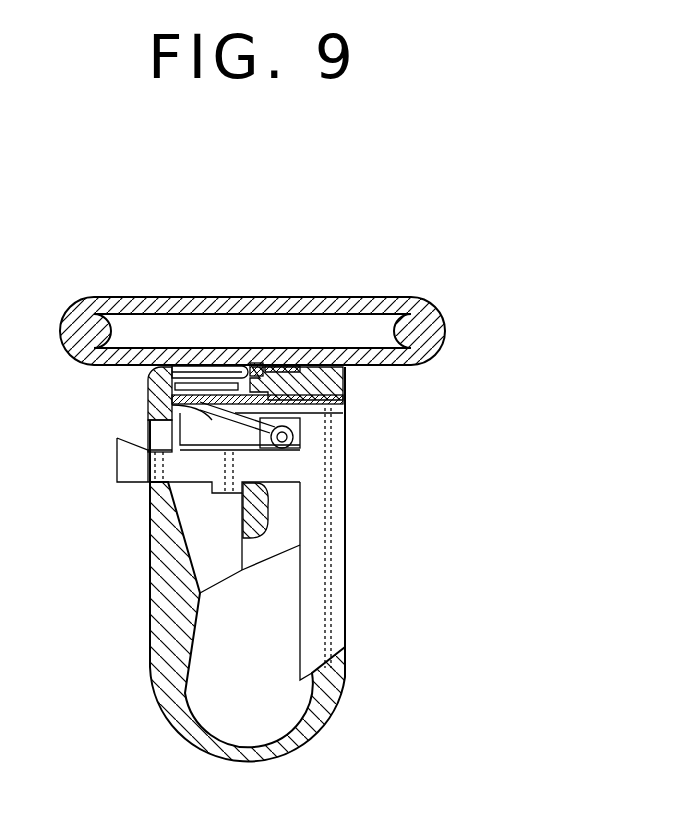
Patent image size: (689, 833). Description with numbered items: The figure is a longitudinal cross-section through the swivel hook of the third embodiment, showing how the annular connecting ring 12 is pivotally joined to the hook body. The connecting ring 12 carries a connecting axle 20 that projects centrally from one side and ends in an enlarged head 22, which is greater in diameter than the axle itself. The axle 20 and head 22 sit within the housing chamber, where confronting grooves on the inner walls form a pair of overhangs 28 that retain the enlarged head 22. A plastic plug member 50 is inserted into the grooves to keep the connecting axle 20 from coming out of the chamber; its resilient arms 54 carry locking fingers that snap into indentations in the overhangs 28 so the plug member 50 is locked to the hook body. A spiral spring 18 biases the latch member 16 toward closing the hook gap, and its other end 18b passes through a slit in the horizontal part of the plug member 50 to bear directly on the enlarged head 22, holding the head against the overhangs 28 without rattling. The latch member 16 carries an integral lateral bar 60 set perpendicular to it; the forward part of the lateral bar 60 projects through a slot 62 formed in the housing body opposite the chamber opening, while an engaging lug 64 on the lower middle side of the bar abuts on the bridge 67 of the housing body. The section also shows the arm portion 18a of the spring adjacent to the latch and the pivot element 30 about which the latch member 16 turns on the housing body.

The connecting ring 12 is at (362, 296).
The latch member 16 is at (335, 623).
The spiral spring 18 is at (298, 431).
The lower arm of latch member 18a is at (197, 455).
The other end of the spring 18b is at (172, 407).
The connecting axle 20 is at (252, 364).
The enlarged head 22 is at (195, 378).
The overhangs 28 is at (200, 378).
The spring 30 is at (296, 443).
The plug member 50 is at (345, 382).
The resilient arms 54 is at (276, 376).
The lateral bar 60 is at (123, 467).
The slot 62 is at (150, 431).
The engaging lug 64 is at (217, 487).
The bridge 67 is at (268, 510).